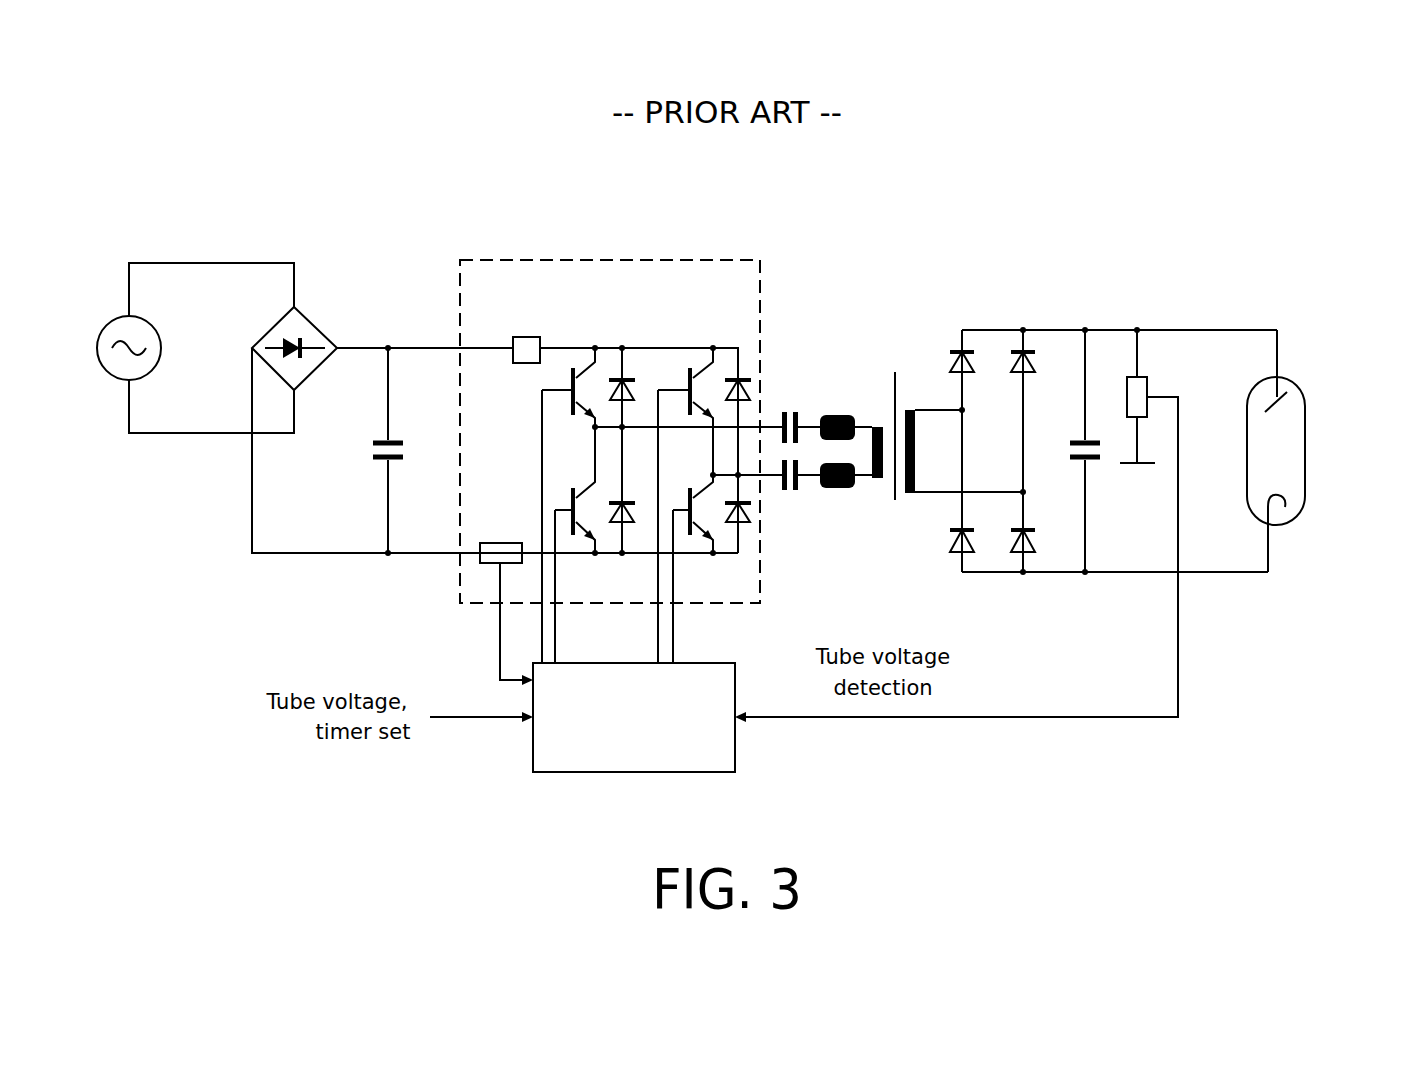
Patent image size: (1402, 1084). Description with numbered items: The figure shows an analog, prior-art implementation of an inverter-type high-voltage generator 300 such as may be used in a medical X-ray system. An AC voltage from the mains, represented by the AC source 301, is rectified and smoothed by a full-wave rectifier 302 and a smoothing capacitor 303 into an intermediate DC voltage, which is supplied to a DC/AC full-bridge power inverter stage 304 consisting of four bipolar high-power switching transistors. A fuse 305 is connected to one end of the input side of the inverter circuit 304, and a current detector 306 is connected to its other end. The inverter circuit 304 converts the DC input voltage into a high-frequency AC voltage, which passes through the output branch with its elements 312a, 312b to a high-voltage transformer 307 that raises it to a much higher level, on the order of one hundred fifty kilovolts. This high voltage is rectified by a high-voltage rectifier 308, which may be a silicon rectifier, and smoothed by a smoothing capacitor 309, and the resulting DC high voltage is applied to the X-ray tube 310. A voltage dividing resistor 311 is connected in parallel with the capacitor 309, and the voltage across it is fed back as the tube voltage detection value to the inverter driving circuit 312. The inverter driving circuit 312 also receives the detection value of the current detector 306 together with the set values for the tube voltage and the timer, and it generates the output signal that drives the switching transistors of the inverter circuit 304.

The X-ray tube power supply circuit (prior art) 300 is at (1085, 176).
The AC power source 301 is at (96, 349).
The full-wave rectifier 302 is at (314, 325).
The smoothing capacitor 303 is at (373, 458).
The DC/AC full-bridge power inverter stage 304 is at (608, 258).
The fuse 305 is at (527, 336).
The current detector 306 is at (500, 542).
The high-voltage transformer 307 is at (894, 412).
The high-voltage rectifier 308 is at (990, 329).
The smoothing capacitor 309 is at (1097, 462).
The X-ray tube 310 is at (1306, 452).
The voltage dividing resistor 311 is at (1150, 385).
The inverter driving circuit 312 is at (575, 774).
The resonance inductor (upper) 312a is at (822, 404).
The resonance inductor (lower) 312b is at (821, 496).